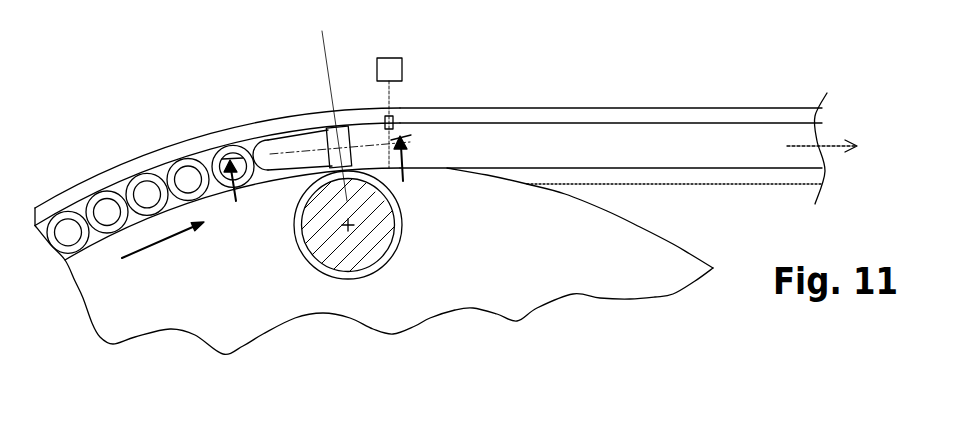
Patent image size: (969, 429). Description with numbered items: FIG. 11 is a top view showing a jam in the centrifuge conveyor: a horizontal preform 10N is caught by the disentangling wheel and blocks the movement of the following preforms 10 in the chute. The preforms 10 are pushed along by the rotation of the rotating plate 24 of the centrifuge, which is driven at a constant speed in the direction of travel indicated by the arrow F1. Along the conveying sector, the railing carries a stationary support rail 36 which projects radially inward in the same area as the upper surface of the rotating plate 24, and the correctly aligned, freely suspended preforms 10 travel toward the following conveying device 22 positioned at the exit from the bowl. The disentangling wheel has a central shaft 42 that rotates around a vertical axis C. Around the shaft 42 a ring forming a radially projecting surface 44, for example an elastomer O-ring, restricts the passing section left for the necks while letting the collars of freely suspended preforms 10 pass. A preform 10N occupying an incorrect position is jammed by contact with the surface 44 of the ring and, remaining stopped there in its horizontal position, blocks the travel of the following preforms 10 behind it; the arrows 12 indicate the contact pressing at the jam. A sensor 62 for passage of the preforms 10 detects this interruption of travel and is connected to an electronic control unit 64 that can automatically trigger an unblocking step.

The preform 10 is at (147, 190).
The preform in blocking position 10N is at (285, 147).
The pressing force / contact direction 12 is at (330, 183).
The conveying device 22 is at (647, 143).
The rotating plate 24 is at (660, 277).
The stationary support rail 36 is at (185, 142).
The central shaft 42 is at (390, 225).
The radially projecting surface 44 is at (302, 240).
The sensor 62 is at (397, 124).
The electronic control unit 64 is at (402, 68).
The vertical axis C is at (348, 225).
The direction of travel F1 is at (165, 245).